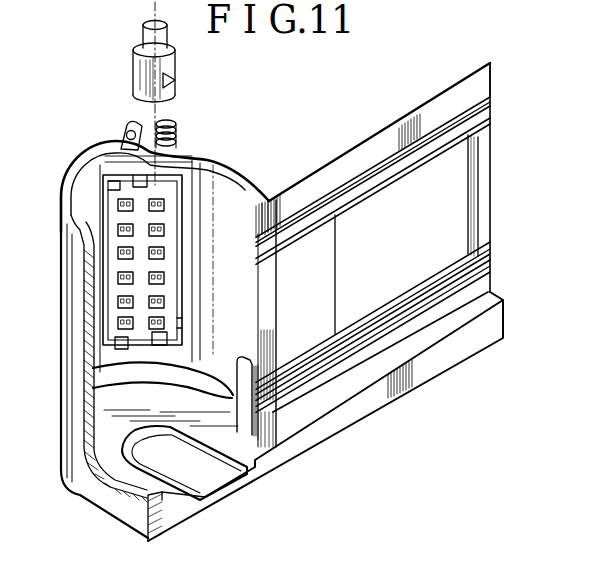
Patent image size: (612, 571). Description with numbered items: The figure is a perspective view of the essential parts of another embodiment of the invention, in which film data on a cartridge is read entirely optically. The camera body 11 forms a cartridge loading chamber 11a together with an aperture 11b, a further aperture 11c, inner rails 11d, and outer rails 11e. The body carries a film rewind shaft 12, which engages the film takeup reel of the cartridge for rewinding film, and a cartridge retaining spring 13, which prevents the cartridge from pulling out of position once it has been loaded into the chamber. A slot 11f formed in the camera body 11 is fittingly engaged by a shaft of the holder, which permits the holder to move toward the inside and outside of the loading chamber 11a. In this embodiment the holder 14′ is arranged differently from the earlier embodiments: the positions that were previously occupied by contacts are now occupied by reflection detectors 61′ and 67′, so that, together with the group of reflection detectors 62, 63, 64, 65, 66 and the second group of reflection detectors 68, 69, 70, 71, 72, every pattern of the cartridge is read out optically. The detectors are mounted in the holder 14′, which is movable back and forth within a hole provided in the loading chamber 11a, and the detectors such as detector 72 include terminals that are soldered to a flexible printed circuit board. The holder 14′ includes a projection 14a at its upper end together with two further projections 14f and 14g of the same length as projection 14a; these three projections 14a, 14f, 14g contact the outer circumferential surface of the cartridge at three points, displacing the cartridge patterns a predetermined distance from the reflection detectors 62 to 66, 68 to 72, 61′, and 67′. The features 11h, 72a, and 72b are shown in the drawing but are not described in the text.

The camera body 11 is at (418, 376).
The cartridge loading chamber 11a is at (230, 362).
The aperture 11b is at (462, 50).
The aperture 11c is at (457, 192).
The inner rails 11d is at (495, 121).
The outer rails 11e is at (493, 102).
The slot 11f is at (127, 120).
The block side wall 11h is at (182, 322).
The film rewind shaft 12 is at (135, 72).
The cartridge retaining spring 13 is at (252, 404).
The holder 14′ is at (108, 350).
The projection 14a is at (133, 172).
The projection 14f is at (140, 370).
The projection 14g is at (163, 390).
The reflection detector 61′ is at (182, 306).
The reflection detector 62 is at (164, 299).
The reflection detector 63 is at (164, 278).
The reflection detector 64 is at (164, 253).
The reflection detector 65 is at (164, 229).
The reflection detector 66 is at (164, 203).
The reflection detector 67′ is at (150, 386).
The reflection detector 68 is at (117, 305).
The reflection detector 69 is at (117, 280).
The reflection detector 70 is at (117, 255).
The reflection detector 71 is at (117, 232).
The reflection detector 72 is at (117, 206).
The contact tab 72a is at (124, 199).
The contact notch 72b is at (138, 186).